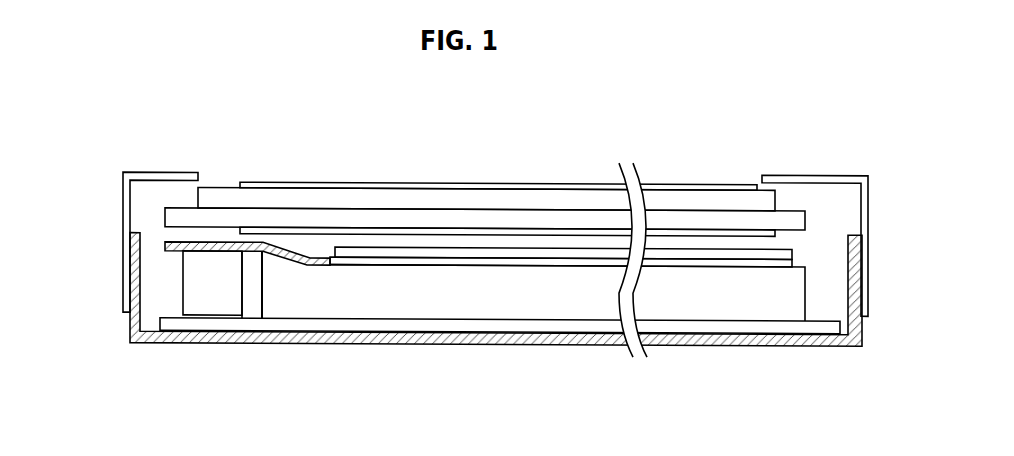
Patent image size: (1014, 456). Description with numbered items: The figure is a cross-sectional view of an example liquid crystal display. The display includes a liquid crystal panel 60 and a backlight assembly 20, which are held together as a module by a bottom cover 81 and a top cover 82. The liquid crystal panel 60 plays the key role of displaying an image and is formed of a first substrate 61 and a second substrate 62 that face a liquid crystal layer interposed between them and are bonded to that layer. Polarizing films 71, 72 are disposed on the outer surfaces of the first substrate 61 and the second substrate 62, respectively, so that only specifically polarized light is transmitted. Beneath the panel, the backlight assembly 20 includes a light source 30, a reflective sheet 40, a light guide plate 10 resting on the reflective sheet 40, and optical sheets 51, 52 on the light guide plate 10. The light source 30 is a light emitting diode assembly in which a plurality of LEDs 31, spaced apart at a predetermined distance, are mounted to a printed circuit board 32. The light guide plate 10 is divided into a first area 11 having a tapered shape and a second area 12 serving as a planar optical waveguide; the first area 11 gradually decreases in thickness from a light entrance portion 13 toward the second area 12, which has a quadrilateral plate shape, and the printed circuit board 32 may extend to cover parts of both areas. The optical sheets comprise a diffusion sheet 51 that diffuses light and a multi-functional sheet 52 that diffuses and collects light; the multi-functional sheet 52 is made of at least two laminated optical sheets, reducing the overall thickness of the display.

The light guide plate 10 is at (525, 339).
The first area 11 is at (290, 306).
The second area 12 is at (338, 305).
The light entrance portion 13 is at (262, 290).
The backlight assembly 20 is at (166, 276).
The light source 30 is at (211, 338).
The LEDs 31 is at (223, 306).
The printed circuit board 32 is at (182, 315).
The reflective sheet 40 is at (477, 323).
The diffusion sheet 51 is at (523, 259).
The multi-functional sheet 52 is at (567, 250).
The liquid crystal panel 60 is at (486, 157).
The first substrate 61 is at (328, 131).
The second substrate 62 is at (330, 198).
The polarizing film 71 is at (507, 232).
The polarizing film 72 is at (467, 186).
The bottom cover 81 is at (137, 321).
The top cover 82 is at (127, 206).